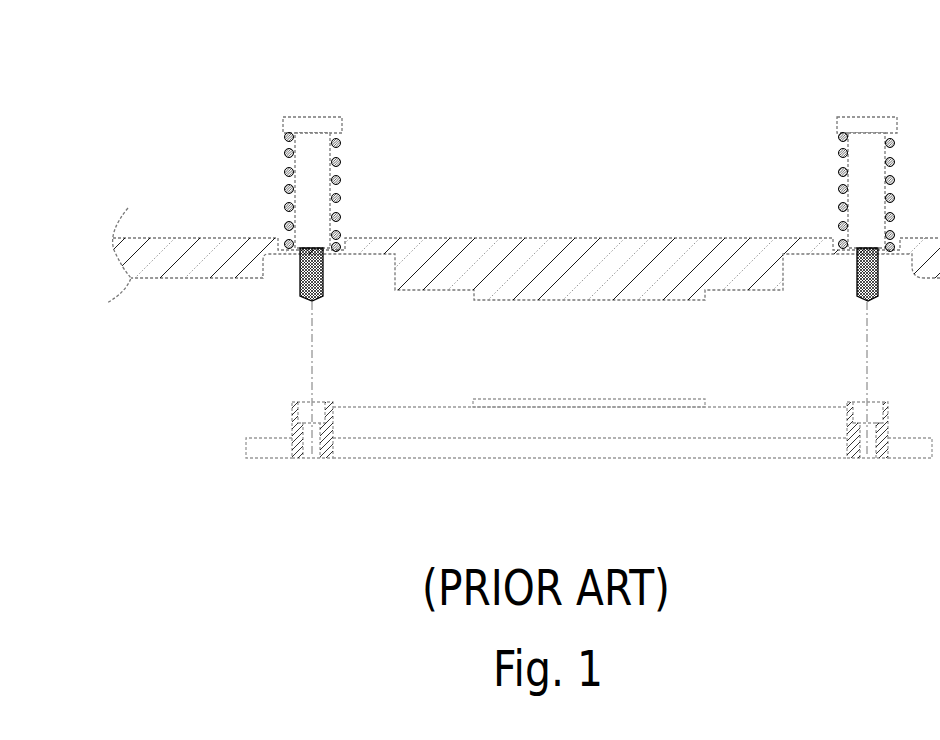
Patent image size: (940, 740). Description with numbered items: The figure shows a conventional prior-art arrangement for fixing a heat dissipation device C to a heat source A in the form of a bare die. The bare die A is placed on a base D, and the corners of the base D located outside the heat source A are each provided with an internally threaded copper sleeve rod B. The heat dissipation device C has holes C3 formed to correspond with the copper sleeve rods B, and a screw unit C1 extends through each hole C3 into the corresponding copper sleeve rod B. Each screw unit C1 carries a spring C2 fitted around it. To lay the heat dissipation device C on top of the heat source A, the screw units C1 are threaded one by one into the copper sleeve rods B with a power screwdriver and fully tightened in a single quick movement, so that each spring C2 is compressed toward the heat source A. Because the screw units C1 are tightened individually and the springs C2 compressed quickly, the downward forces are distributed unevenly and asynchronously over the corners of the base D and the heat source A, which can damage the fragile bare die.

The heat source A is at (508, 400).
The copper sleeve rod B is at (292, 420).
The heat dissipation device C is at (230, 245).
The screw unit C1 is at (293, 128).
The spring C2 is at (337, 138).
The hole C3 is at (278, 257).
The base D is at (250, 450).